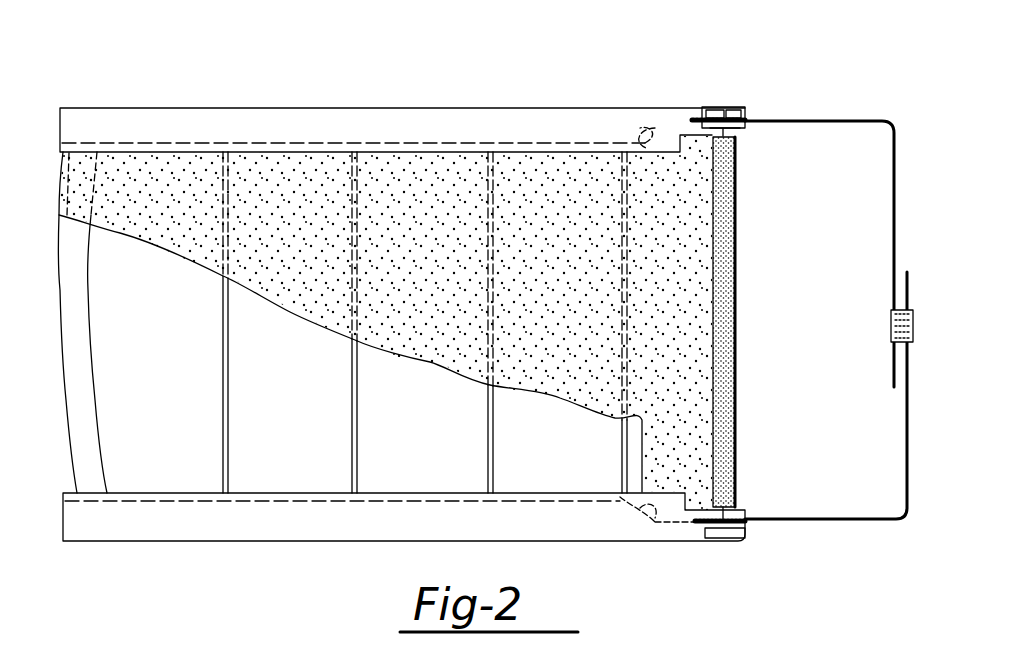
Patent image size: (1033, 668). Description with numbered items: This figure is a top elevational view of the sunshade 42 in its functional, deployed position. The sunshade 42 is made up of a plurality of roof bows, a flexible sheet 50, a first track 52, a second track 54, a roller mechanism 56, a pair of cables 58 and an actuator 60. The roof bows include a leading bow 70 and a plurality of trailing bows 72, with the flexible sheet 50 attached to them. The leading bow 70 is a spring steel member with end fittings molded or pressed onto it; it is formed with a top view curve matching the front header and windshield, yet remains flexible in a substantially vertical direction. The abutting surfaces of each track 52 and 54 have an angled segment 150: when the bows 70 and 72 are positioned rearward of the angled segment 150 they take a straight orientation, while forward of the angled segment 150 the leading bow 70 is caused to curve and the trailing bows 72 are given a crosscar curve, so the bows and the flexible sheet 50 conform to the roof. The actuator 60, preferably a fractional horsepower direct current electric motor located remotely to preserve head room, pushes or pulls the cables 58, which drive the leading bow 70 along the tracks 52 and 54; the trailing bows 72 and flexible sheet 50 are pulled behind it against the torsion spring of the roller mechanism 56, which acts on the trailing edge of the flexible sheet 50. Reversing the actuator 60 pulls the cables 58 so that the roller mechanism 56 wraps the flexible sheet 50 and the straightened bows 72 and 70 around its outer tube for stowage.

The sunshade 42 is at (272, 96).
The flexible sheet 50 is at (423, 197).
The first track 52 is at (132, 128).
The second track 54 is at (175, 517).
The roller mechanism 56 is at (752, 172).
The cables 58 is at (860, 120).
The actuator 60 is at (890, 320).
The leading bow 70 is at (70, 330).
The trailing bows 72 is at (223, 390).
The angled segment 150 is at (653, 128).